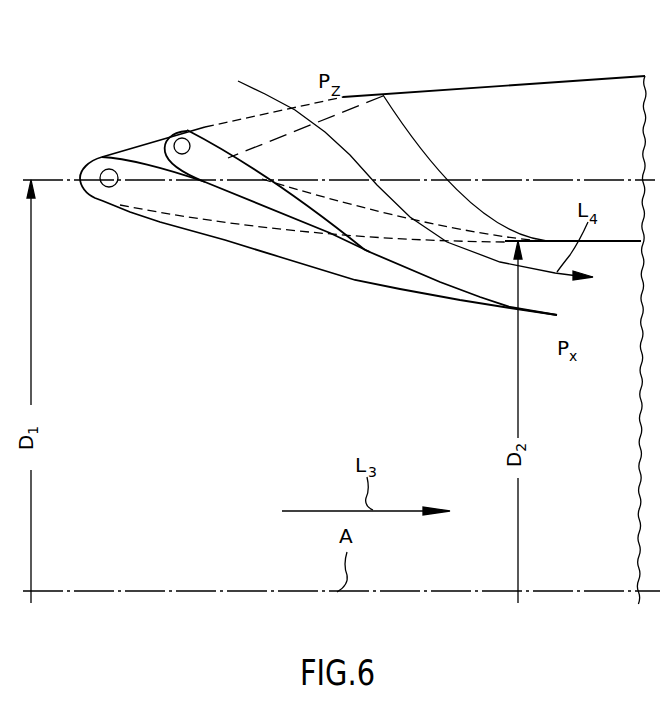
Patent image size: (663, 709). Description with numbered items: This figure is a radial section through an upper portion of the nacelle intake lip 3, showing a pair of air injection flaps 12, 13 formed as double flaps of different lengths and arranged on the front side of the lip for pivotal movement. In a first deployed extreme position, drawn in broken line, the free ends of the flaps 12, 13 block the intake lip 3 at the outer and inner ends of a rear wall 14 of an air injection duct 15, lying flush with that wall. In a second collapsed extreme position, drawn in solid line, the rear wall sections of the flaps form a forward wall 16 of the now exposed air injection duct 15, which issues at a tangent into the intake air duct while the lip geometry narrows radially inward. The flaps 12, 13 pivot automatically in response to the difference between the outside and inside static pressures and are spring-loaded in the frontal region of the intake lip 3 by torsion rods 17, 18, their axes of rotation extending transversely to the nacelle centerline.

The intake lip 3 is at (377, 83).
The air injection flap 12 is at (332, 257).
The air injection flap 13 is at (263, 198).
The rear wall 14 is at (404, 134).
The air injection duct 15 is at (352, 153).
The forward wall 16 is at (322, 217).
The torsion rod 17 is at (106, 169).
The torsion rod 18 is at (181, 137).